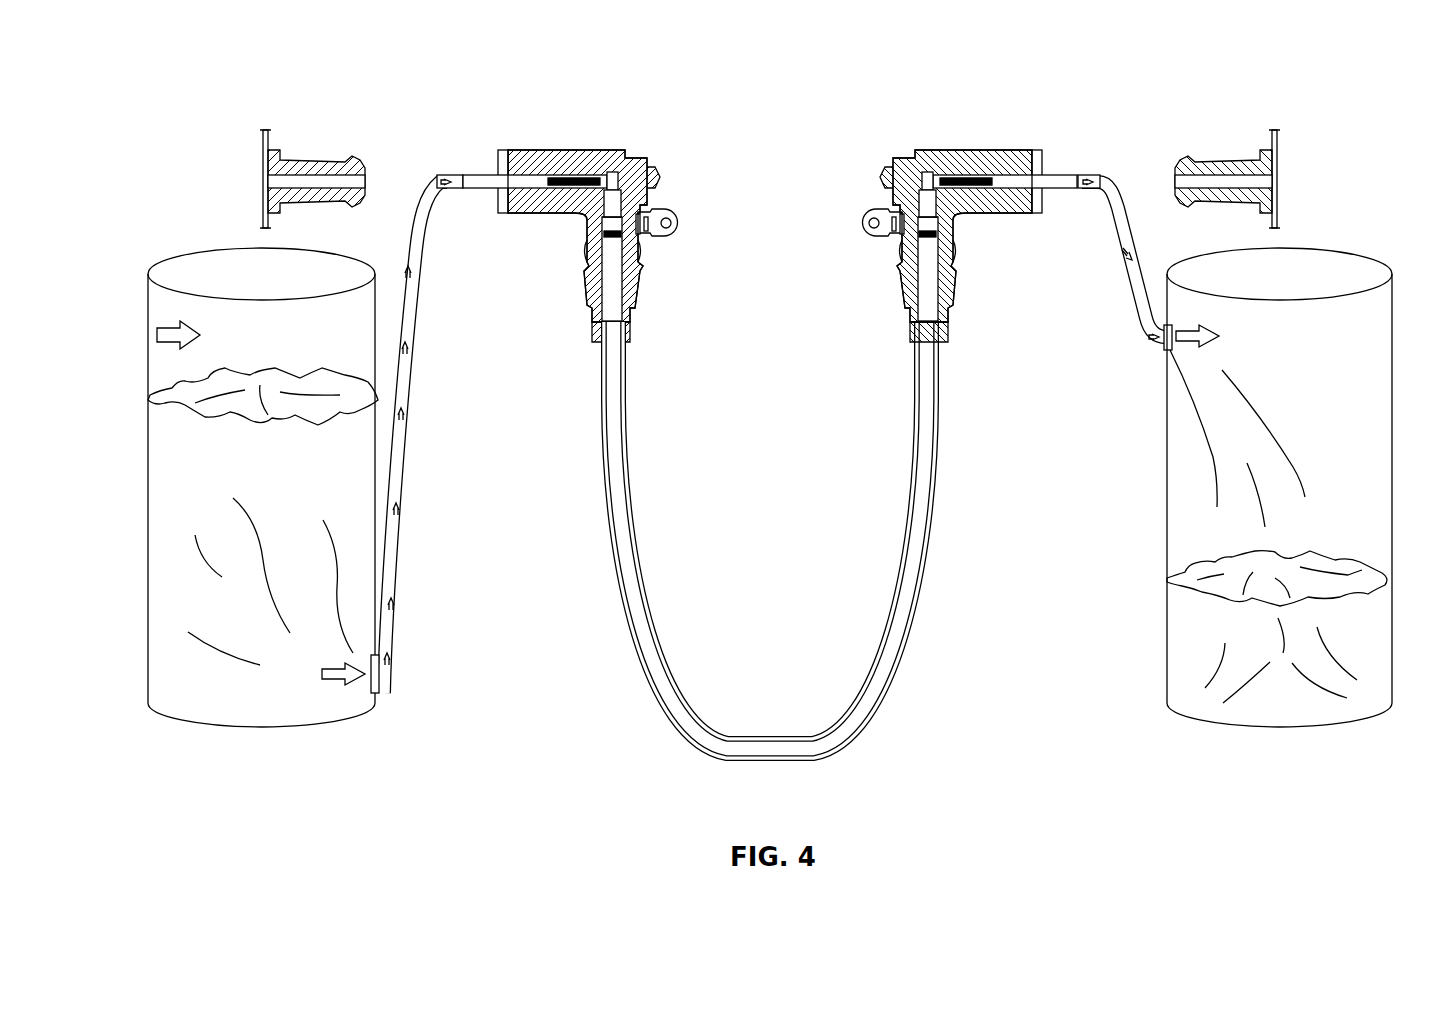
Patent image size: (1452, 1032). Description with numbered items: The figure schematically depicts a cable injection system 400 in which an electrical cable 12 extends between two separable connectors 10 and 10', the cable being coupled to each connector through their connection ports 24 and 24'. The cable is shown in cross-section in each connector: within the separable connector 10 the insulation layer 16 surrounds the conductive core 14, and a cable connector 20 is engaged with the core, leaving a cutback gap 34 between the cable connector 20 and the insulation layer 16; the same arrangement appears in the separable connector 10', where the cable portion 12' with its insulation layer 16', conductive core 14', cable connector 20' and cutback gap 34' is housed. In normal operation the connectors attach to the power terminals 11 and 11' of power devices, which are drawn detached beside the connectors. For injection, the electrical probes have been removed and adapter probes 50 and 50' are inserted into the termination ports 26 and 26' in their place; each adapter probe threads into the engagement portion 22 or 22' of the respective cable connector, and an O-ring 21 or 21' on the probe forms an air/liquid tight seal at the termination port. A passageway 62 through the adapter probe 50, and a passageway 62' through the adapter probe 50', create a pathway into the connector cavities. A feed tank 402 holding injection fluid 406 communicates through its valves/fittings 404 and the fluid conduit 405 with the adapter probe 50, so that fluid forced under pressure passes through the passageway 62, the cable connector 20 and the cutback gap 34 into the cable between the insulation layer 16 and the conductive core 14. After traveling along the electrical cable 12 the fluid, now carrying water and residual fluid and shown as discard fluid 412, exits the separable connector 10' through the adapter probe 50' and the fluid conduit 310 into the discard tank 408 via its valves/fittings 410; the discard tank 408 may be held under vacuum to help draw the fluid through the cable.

The separable connector 10 is at (612, 211).
The separable connector 10' is at (935, 211).
The power terminal 11 is at (312, 170).
The power terminal 11' is at (1225, 170).
The electrical cable 12 is at (770, 535).
The electrical cable 12' is at (885, 361).
The conductive core 14 is at (648, 249).
The conductive core 14' is at (891, 249).
The insulation layer 16 is at (577, 236).
The insulation layer 16' is at (962, 236).
The cable connector 20 is at (581, 218).
The cable connector 20' is at (960, 218).
The O-ring 21 is at (591, 150).
The O-ring 21' is at (949, 135).
The engagement portion 22 is at (633, 149).
The engagement portion 22' is at (910, 149).
The connection port 24 is at (580, 346).
The connection port 24' is at (958, 346).
The termination port 26 is at (475, 174).
The termination port 26' is at (1068, 174).
The cutback gap 34 is at (674, 209).
The cutback gap 34' is at (870, 209).
The adapter probe 50 is at (529, 211).
The adapter probe 50' is at (1012, 211).
The passageway 62 is at (560, 148).
The passageway 62' is at (972, 148).
The fluid conduit 310 is at (1123, 300).
The cable injection system 400 is at (1129, 751).
The feed tank 402 is at (205, 242).
The valves/fittings 404 is at (388, 699).
The fluid conduit 405 is at (421, 468).
The injection fluid 406 is at (222, 507).
The discard tank 408 is at (1343, 243).
The valves/fittings 410 is at (1153, 345).
The discard fluid 412 is at (1343, 543).